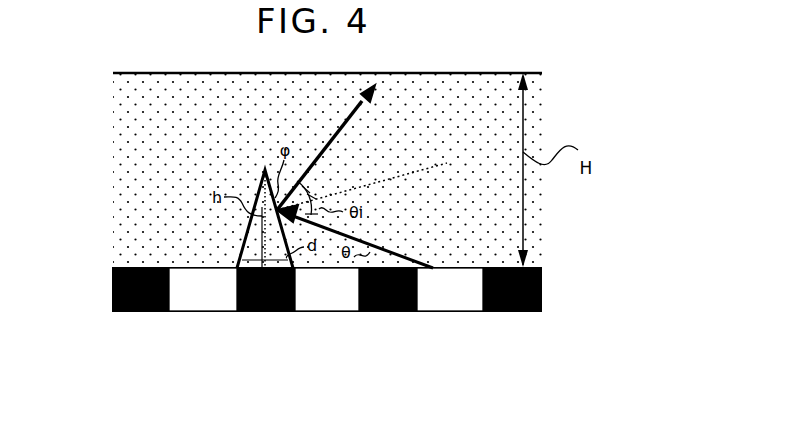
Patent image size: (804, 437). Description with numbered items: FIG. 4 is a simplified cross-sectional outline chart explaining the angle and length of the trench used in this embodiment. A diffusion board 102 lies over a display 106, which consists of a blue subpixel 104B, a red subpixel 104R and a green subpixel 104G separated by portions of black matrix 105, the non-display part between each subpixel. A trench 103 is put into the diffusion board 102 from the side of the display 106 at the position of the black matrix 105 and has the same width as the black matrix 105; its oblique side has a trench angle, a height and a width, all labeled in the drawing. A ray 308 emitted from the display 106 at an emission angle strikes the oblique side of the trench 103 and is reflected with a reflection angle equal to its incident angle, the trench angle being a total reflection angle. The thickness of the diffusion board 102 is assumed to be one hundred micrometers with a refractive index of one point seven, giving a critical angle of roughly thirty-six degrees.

The diffusion board 102 is at (101, 73).
The display 106 is at (101, 266).
The trench 103 is at (244, 246).
The ray 308 is at (352, 120).
The black matrix 105 is at (142, 313).
The blue subpixel 104B is at (205, 313).
The red subpixel 104R is at (330, 313).
The green subpixel 104G is at (455, 313).